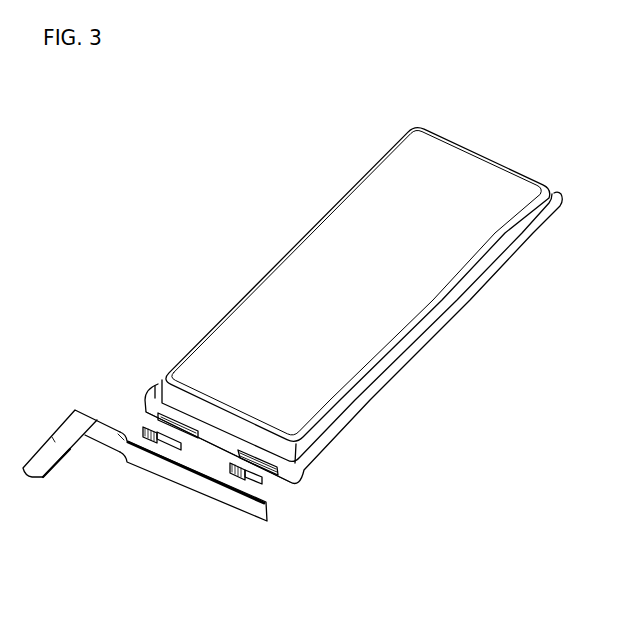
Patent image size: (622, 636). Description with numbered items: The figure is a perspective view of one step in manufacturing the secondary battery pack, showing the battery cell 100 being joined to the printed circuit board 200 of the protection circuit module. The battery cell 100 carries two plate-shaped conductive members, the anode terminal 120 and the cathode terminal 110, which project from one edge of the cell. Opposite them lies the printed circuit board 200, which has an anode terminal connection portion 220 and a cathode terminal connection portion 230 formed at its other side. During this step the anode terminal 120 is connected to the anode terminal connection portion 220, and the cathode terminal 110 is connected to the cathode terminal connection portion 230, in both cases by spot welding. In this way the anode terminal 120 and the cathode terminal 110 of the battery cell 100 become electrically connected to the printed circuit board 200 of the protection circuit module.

The battery cell 100 is at (477, 188).
The cathode terminal 110 is at (294, 483).
The anode terminal 120 is at (160, 422).
The printed circuit board 200 is at (243, 521).
The anode terminal connection portion 220 is at (120, 457).
The cathode terminal connection portion 230 is at (193, 495).